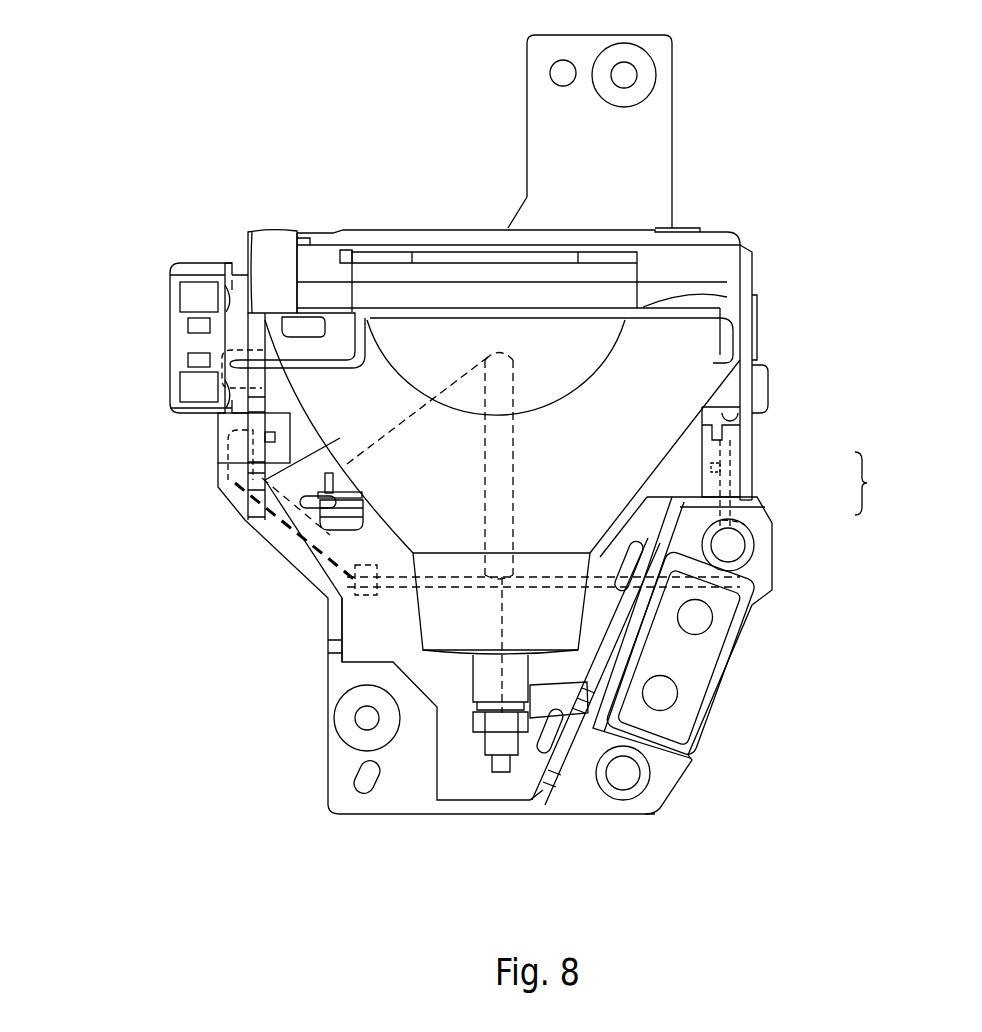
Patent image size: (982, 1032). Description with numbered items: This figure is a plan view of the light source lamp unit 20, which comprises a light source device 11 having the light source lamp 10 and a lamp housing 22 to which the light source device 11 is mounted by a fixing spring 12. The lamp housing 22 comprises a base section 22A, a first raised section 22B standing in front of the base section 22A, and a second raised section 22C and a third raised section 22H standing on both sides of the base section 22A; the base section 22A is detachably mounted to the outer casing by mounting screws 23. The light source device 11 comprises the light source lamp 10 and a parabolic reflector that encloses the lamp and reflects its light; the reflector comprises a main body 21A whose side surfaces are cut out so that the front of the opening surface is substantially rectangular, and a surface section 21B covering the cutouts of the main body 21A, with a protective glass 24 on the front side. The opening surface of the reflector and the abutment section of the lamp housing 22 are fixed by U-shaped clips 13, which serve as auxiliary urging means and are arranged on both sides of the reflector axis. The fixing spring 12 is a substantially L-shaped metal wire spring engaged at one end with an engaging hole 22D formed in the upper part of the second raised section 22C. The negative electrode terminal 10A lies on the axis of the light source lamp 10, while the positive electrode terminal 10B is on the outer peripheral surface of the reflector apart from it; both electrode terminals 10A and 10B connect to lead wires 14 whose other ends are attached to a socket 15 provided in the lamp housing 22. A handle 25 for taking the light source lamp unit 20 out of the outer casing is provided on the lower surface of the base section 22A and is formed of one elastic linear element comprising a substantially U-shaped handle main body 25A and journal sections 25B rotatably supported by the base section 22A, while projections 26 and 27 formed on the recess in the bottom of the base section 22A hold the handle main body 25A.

The light source lamp 10 is at (513, 487).
The negative electrode terminal 10A is at (493, 740).
The positive electrode terminal 10B is at (322, 512).
The light source device 11 is at (778, 283).
The fixing spring 12 is at (557, 317).
The U-shaped clip 13 is at (270, 243).
The lead wire 14 is at (307, 568).
The socket 15 is at (688, 690).
The light source lamp unit 20 is at (178, 222).
The main body 21A is at (255, 483).
The surface section 21B is at (428, 337).
The lamp housing 22 is at (312, 773).
The base section 22A is at (360, 647).
The first raised section 22B is at (722, 235).
The second raised section 22C is at (258, 383).
The engaging hole 22D is at (215, 385).
The third raised section 22H is at (752, 326).
The mounting screw 23 is at (640, 92).
The protective glass 24 is at (472, 228).
The handle 25 is at (804, 511).
The handle main body 25A is at (747, 513).
The journal section 25B is at (740, 447).
The projection 26 is at (708, 470).
The projection 27 is at (333, 618).